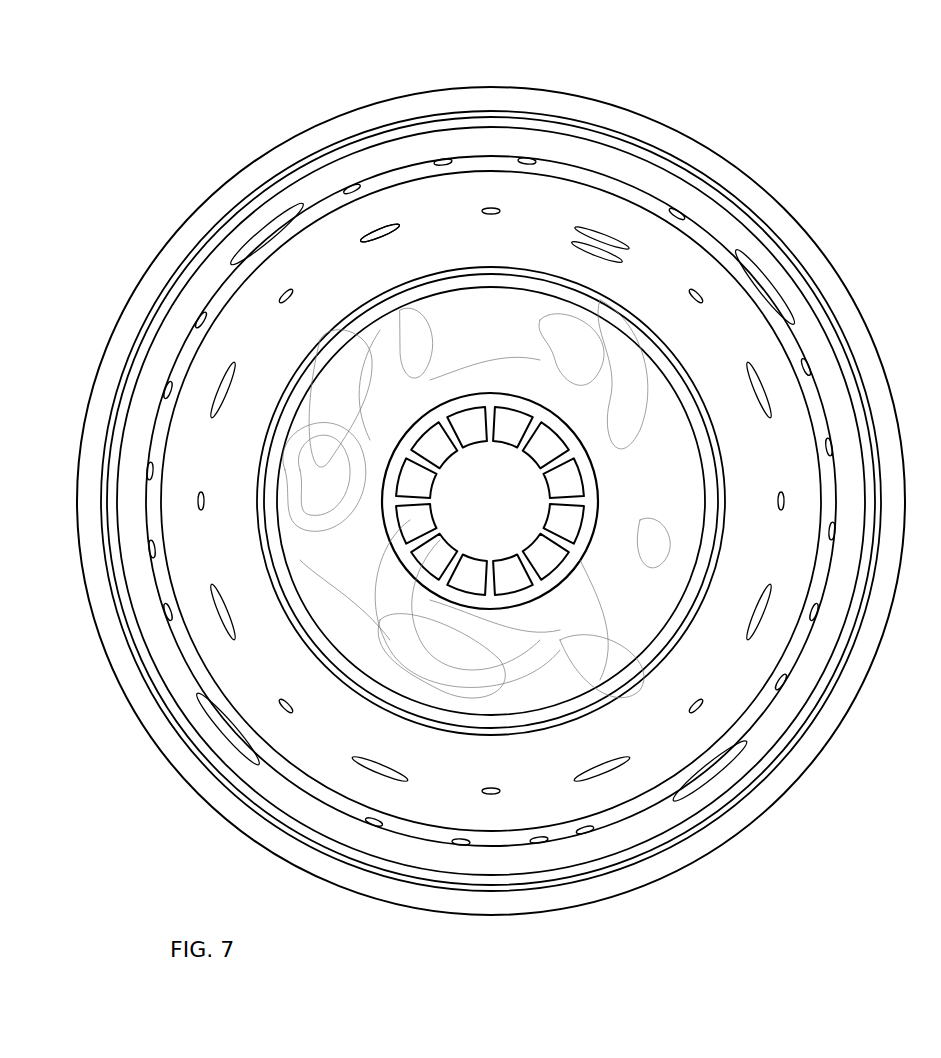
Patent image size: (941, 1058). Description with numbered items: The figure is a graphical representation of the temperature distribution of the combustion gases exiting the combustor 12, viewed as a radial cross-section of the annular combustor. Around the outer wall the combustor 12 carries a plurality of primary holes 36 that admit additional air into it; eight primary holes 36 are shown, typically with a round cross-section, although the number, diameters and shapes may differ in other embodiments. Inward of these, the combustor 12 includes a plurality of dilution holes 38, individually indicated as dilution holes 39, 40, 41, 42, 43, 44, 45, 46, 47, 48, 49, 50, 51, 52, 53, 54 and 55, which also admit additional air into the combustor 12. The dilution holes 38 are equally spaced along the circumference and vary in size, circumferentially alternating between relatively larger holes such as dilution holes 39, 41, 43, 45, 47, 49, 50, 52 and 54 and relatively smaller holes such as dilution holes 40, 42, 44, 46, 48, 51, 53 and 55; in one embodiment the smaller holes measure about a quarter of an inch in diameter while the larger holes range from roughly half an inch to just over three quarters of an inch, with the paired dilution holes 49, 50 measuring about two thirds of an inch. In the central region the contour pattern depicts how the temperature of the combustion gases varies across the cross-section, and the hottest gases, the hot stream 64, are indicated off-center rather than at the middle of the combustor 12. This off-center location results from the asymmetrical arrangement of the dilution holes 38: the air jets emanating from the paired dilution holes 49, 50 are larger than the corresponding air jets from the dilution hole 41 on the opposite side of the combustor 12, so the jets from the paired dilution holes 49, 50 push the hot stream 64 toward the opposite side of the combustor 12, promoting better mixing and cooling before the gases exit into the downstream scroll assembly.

The combustor 12 is at (808, 222).
The primary holes 36 is at (528, 160).
The dilution holes 38 is at (365, 226).
The dilution hole 39 is at (222, 594).
The dilution hole 40 is at (284, 700).
The dilution hole 41 is at (362, 760).
The dilution hole 42 is at (482, 792).
The dilution hole 43 is at (578, 774).
The dilution hole 44 is at (696, 700).
The dilution hole 45 is at (764, 592).
The dilution hole 46 is at (776, 492).
The dilution hole 47 is at (750, 376).
The dilution hole 48 is at (690, 298).
The dilution hole 49 is at (578, 230).
The dilution hole 50 is at (576, 246).
The dilution hole 51 is at (483, 214).
The dilution hole 52 is at (378, 240).
The dilution hole 53 is at (288, 302).
The dilution hole 54 is at (234, 360).
The dilution hole 55 is at (204, 494).
The hot stream 64 is at (432, 577).